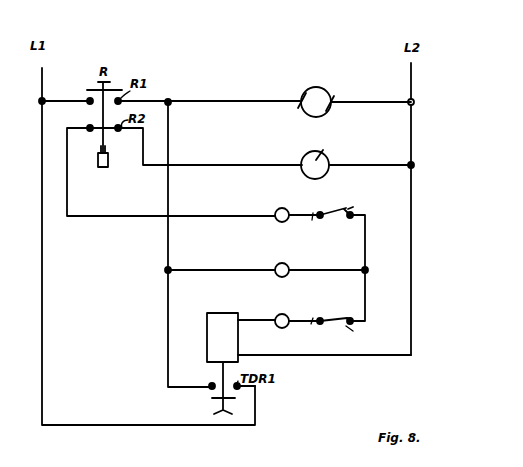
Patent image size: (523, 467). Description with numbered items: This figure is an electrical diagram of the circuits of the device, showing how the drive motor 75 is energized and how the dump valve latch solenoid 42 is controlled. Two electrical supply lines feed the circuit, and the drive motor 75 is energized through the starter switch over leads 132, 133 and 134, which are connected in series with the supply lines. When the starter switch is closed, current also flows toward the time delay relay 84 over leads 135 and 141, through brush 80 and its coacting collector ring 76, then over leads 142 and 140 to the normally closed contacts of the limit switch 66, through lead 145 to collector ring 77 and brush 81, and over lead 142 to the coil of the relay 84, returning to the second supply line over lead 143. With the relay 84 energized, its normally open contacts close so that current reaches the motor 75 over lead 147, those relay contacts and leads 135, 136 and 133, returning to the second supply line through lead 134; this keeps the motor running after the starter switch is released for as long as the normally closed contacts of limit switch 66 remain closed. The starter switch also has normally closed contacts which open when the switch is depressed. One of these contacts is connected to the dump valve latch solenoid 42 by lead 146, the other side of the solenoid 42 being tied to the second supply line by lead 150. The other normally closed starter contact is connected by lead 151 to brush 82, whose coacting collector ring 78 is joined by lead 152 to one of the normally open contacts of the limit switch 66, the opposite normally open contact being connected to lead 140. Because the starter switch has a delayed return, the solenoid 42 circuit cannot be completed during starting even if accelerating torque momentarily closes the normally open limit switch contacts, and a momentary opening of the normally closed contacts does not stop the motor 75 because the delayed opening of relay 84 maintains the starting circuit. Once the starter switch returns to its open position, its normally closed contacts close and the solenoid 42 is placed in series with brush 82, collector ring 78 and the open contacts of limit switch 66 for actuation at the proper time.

The lead 132 is at (75, 103).
The lead 133 is at (233, 104).
The lead 134 is at (392, 102).
The lead 135 is at (169, 152).
The lead 136 is at (166, 316).
The lead 140 is at (372, 244).
The lead 141 is at (220, 271).
The lead 142 is at (343, 268).
The lead 143 is at (354, 358).
The lead 145 is at (308, 309).
The lead 146 is at (255, 168).
The lead 147 is at (42, 284).
The lead 150 is at (382, 166).
The lead 151 is at (145, 217).
The lead 152 is at (322, 207).
The limit switch 66 is at (336, 213).
The drive motor 75 is at (312, 92).
The collector ring 76 is at (268, 272).
The collector ring 77 is at (281, 322).
The collector ring 78 is at (268, 215).
The brush 80 is at (276, 266).
The brush 81 is at (279, 335).
The brush 82 is at (276, 210).
The time delay relay 84 is at (207, 340).
The dump valve latch solenoid 42 is at (334, 161).